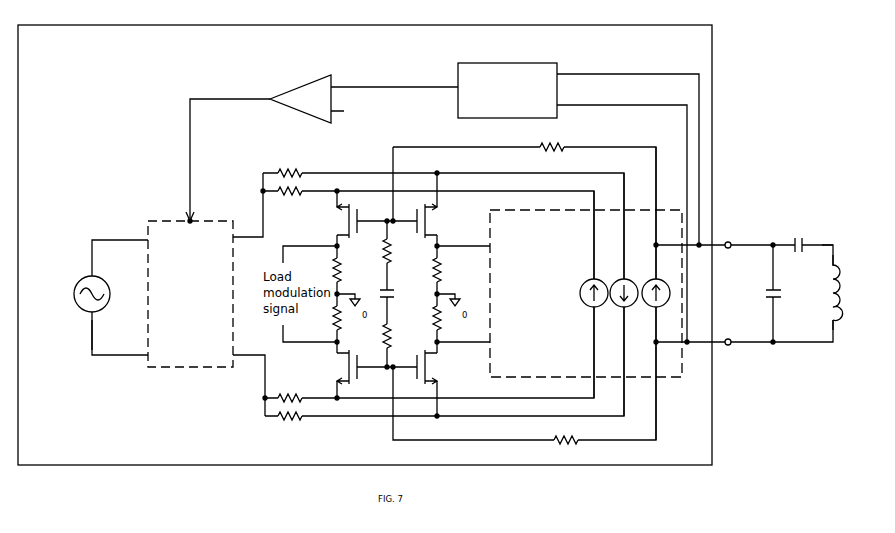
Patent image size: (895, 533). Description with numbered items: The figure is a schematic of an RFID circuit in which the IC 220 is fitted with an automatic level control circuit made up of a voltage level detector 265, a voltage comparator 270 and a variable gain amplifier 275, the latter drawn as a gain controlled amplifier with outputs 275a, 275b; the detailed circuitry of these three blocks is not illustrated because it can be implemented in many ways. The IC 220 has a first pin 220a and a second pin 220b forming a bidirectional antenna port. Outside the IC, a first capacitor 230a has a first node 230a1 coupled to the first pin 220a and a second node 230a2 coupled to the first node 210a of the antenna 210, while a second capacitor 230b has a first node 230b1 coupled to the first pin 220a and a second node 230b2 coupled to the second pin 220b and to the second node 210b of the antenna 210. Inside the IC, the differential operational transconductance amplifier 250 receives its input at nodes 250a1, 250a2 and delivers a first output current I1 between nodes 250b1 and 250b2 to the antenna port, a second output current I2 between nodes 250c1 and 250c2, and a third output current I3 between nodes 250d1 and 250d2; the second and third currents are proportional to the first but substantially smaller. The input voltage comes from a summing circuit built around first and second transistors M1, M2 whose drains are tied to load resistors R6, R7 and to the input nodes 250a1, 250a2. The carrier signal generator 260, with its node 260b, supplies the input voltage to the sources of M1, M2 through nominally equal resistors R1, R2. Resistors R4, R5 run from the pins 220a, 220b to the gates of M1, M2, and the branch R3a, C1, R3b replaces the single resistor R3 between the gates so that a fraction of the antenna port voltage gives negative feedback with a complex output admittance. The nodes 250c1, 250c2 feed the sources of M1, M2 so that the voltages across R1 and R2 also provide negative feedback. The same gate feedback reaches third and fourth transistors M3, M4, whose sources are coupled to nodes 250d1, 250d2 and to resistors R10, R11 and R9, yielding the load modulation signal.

The IC 220 is at (682, 53).
The voltage level detector 265 is at (578, 191).
The voltage comparator 270 is at (322, 140).
The variable gain amplifier 275 is at (190, 294).
The first output of gain controlled amplifier 275a is at (248, 214).
The second output of gain controlled amplifier 275b is at (249, 385).
The carrier signal generator 260 is at (98, 297).
The node of the input voltage generator 260b is at (108, 335).
The differential operational transconductance amplifier (OTA) 250 is at (566, 255).
The input node of OTA 250a1 is at (483, 240).
The input node of OTA 250a2 is at (483, 347).
The first output current node 250b1 is at (661, 213).
The first output current node 250b2 is at (663, 373).
The second output current node 250c1 is at (625, 226).
The second output current node 250c2 is at (625, 361).
The third output current node 250d1 is at (578, 235).
The third output current node 250d2 is at (578, 352).
The first pin 220a is at (727, 237).
The second pin 220b is at (728, 351).
The first capacitor 230a is at (800, 240).
The first node of first capacitor 230a1 is at (766, 239).
The second node of first capacitor 230a2 is at (838, 238).
The second capacitor 230b is at (759, 292).
The first node of second capacitor 230b1 is at (789, 267).
The second node of second capacitor 230b2 is at (788, 320).
The antenna 210 is at (842, 288).
The first node of antenna 210a is at (842, 264).
The second node of antenna 210b is at (845, 321).
The resistor R1 is at (443, 216).
The resistor R2 is at (444, 373).
The resistor R3 is at (427, 226).
The resistor R3a is at (396, 255).
The resistor R3b is at (396, 332).
The resistor R4 is at (524, 211).
The resistor R5 is at (524, 375).
The load resistor R6 is at (426, 275).
The load resistor R7 is at (426, 325).
The resistor R9 is at (428, 354).
The resistor R10 is at (347, 275).
The resistor R11 is at (347, 325).
The capacitor C1 is at (394, 289).
The first transistor M1 is at (436, 208).
The second transistor M2 is at (433, 380).
The third transistor M3 is at (341, 217).
The fourth transistor M4 is at (339, 371).
The first output current I1 is at (657, 291).
The second output current I2 is at (626, 291).
The third output current I3 is at (594, 297).